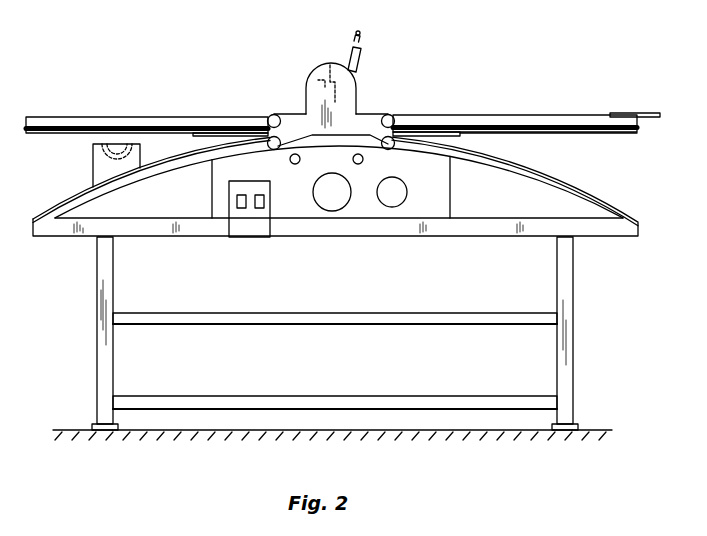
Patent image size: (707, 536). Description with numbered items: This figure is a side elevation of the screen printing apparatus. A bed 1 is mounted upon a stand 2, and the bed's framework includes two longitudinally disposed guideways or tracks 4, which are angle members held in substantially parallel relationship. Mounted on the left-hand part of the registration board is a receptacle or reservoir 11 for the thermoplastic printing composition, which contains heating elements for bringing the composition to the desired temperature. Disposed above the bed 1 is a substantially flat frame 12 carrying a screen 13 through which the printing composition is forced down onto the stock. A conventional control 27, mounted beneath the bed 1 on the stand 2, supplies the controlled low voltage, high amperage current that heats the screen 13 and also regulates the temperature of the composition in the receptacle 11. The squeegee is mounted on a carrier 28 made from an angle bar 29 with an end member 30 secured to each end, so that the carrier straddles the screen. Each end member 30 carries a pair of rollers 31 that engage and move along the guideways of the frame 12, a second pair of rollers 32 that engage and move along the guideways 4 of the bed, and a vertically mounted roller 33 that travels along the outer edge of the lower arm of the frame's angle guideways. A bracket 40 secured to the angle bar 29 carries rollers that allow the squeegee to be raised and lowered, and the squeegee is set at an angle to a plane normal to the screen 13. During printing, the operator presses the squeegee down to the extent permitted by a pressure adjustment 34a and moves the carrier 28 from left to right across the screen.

The bed 1 is at (548, 176).
The stand 2 is at (573, 284).
The guideways or tracks 4 is at (605, 202).
The receptacle or reservoir 11 is at (93, 152).
The frame 12 is at (603, 113).
The screen 13 is at (457, 134).
The control 27 is at (270, 198).
The carrier 28 is at (392, 101).
The angle bar 29 is at (324, 70).
The end member 30 is at (310, 80).
The rollers 31 is at (273, 114).
The rollers 32 is at (271, 150).
The roller 33 is at (403, 127).
The pressure adjustment 34a is at (361, 36).
The bracket 40 is at (362, 59).